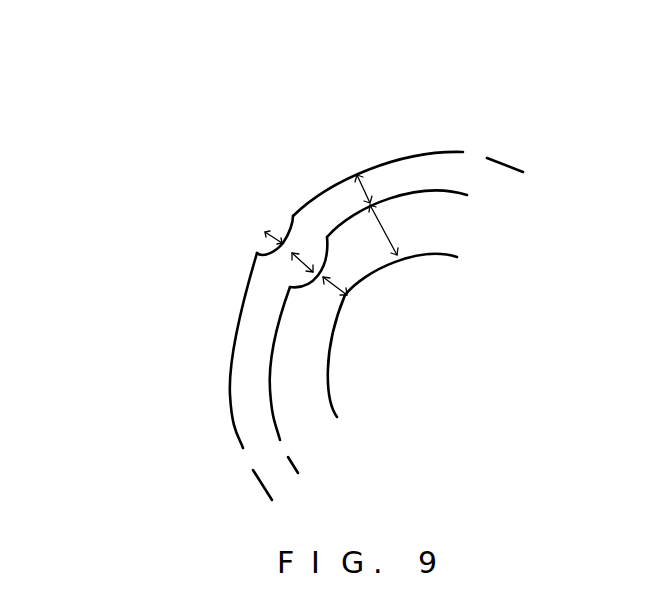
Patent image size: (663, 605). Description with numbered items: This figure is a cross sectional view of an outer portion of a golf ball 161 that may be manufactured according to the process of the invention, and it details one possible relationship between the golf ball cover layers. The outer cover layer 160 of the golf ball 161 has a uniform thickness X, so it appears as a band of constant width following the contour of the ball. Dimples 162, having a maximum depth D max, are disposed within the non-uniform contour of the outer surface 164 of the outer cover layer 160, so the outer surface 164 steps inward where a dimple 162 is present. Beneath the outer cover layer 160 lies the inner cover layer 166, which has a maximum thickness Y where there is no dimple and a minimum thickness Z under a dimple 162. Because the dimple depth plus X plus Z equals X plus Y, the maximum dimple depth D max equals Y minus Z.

The outer cover layer 160 is at (262, 310).
The golf ball 161 is at (403, 137).
The dimples 162 is at (265, 245).
The outer surface 164 is at (252, 282).
The inner cover layer 166 is at (298, 377).